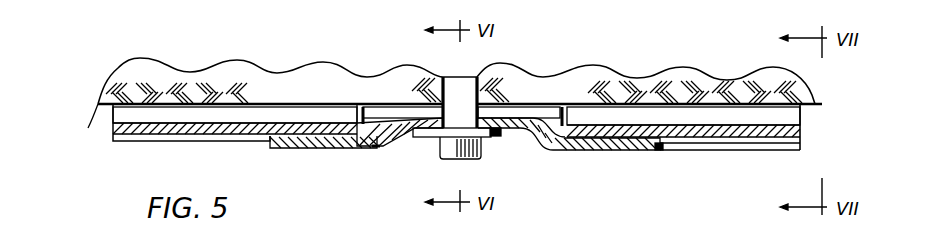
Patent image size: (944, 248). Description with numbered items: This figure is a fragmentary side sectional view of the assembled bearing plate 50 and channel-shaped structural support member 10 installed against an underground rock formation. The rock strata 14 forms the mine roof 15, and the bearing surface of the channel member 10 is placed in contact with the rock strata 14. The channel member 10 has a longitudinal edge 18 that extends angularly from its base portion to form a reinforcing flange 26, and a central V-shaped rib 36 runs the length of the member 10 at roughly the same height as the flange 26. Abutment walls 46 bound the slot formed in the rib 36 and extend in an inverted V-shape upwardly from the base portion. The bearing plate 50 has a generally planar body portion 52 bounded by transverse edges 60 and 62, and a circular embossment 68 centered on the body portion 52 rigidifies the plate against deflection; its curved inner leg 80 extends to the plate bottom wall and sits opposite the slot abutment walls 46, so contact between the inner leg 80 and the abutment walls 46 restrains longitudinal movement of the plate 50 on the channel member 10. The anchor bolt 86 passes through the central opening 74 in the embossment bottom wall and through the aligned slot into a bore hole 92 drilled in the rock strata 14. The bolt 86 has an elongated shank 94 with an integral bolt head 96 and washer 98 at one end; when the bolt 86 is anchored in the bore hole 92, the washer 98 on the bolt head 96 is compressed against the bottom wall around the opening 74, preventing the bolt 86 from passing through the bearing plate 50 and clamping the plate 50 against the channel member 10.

The structural support member 10 is at (806, 126).
The rock strata 14 is at (142, 62).
The mine roof 15 is at (110, 104).
The longitudinal edge 18 is at (128, 143).
The reinforcing flange 26 is at (192, 150).
The rib 36 is at (738, 137).
The abutment walls 46 is at (364, 110).
The bearing plate 50 is at (567, 157).
The plate body portion 52 is at (610, 150).
The transverse edge 60 is at (277, 152).
The transverse edge 62 is at (663, 153).
The circular embossment 68 is at (384, 148).
The central opening 74 is at (440, 112).
The inner leg 80 is at (368, 146).
The anchor bolt 86 is at (452, 107).
The bore hole 92 is at (447, 77).
The shank 94 is at (466, 77).
The bolt head 96 is at (479, 159).
The washer 98 is at (498, 137).